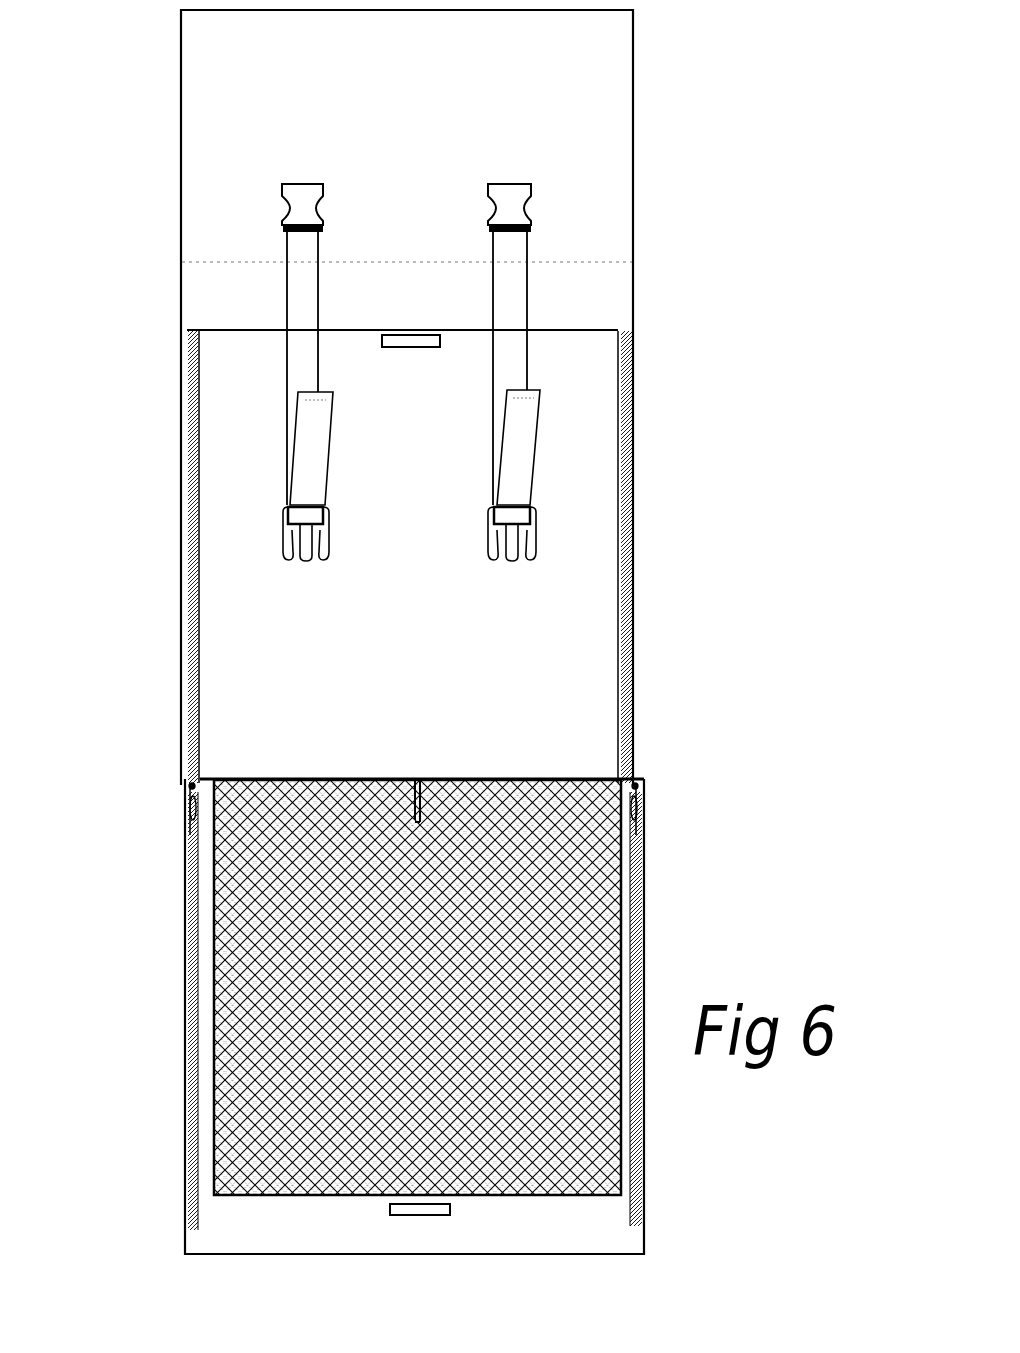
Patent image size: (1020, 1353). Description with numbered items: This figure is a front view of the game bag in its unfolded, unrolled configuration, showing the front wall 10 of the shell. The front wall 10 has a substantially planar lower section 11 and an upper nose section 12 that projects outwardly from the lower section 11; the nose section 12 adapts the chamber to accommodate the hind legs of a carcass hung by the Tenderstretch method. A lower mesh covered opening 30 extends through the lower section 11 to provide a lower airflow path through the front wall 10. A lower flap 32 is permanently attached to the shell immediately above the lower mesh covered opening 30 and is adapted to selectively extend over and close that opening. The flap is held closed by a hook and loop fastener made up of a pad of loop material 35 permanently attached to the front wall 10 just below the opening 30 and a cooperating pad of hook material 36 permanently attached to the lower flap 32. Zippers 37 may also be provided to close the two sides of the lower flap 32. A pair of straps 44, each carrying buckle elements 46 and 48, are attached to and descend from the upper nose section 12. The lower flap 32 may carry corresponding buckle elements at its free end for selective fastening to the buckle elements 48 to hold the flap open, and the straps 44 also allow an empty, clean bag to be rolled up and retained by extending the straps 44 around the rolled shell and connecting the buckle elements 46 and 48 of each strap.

The front wall 10 is at (557, 62).
The lower section 11 is at (365, 302).
The upper nose section 12 is at (407, 162).
The lower mesh covered opening 30 is at (214, 960).
The lower flap 32 is at (242, 644).
The pad of loop material 35 is at (395, 1213).
The pad of hook material 36 is at (397, 343).
The zippers 37 is at (185, 783).
The straps 44 is at (296, 291).
The buckle element 46 is at (303, 200).
The buckle element 48 is at (317, 557).